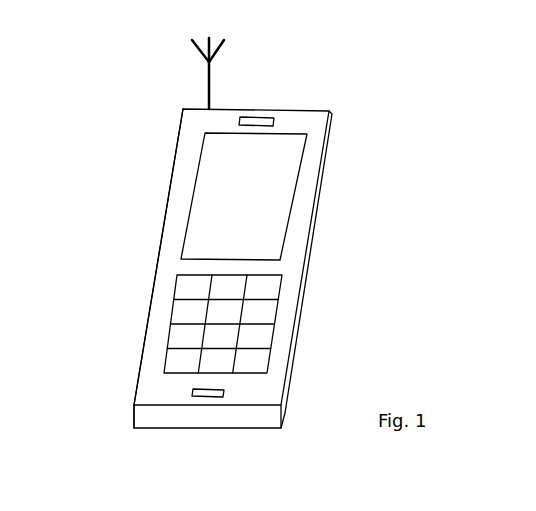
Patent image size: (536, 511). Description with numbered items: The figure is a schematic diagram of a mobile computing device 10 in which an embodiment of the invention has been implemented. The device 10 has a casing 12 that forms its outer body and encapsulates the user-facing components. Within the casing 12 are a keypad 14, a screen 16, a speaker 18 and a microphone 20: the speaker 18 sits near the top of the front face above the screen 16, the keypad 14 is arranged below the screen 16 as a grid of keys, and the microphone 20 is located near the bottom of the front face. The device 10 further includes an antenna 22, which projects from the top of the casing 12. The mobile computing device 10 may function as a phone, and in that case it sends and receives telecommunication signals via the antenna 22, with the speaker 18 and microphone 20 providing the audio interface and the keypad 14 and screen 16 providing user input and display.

The mobile computing device 10 is at (140, 150).
The casing 12 is at (148, 322).
The keypad 14 is at (256, 316).
The screen 16 is at (278, 190).
The speaker 18 is at (260, 118).
The microphone 20 is at (205, 396).
The antenna 22 is at (209, 82).